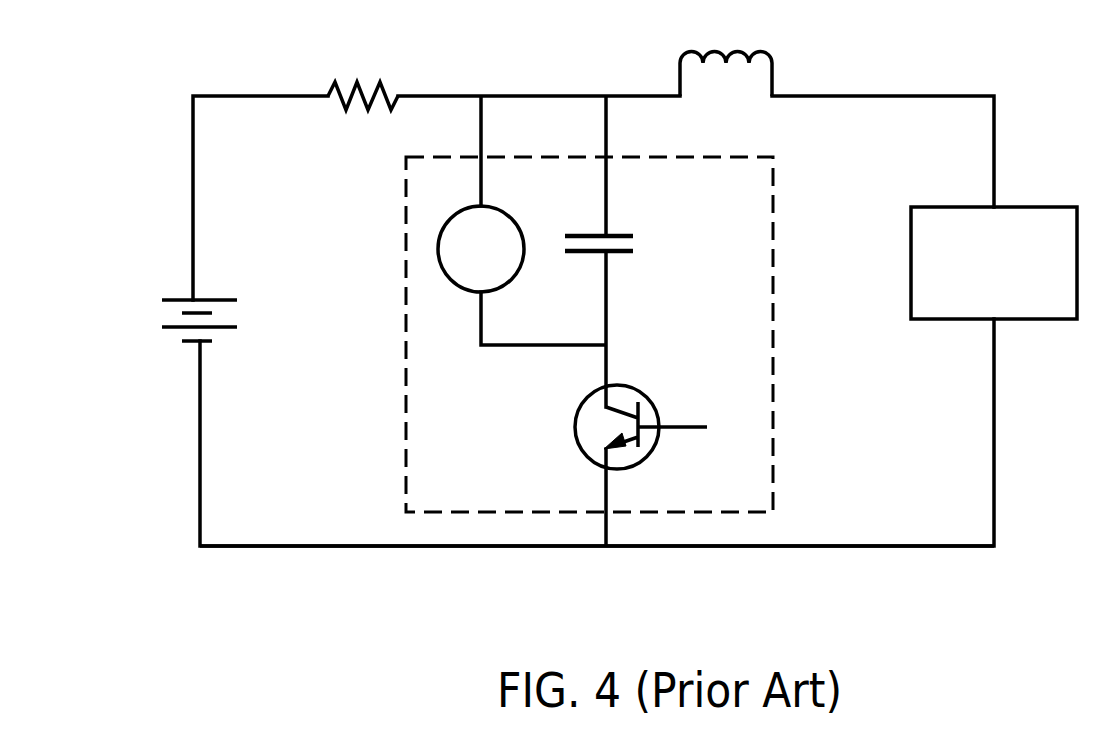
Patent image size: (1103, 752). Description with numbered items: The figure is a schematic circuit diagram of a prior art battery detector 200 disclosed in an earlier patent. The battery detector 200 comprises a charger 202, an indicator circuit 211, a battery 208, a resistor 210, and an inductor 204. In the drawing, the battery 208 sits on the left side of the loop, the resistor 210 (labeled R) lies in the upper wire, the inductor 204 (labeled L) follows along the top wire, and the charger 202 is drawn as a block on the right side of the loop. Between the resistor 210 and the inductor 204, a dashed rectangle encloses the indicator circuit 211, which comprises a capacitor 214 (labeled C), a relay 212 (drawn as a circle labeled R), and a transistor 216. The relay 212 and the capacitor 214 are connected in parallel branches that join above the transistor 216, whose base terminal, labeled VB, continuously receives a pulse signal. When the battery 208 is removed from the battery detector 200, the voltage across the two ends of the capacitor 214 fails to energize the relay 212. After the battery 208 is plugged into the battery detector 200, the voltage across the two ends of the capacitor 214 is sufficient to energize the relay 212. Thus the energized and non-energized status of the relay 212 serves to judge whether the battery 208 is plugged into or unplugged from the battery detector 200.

The battery detector 200 is at (260, 583).
The charger 202 is at (1023, 207).
The inductor 204 is at (747, 53).
The battery 208 is at (210, 300).
The resistor 210 is at (337, 81).
The indicator circuit 211 is at (758, 170).
The relay 212 is at (500, 219).
The capacitor 214 is at (619, 234).
The transistor 216 is at (633, 390).